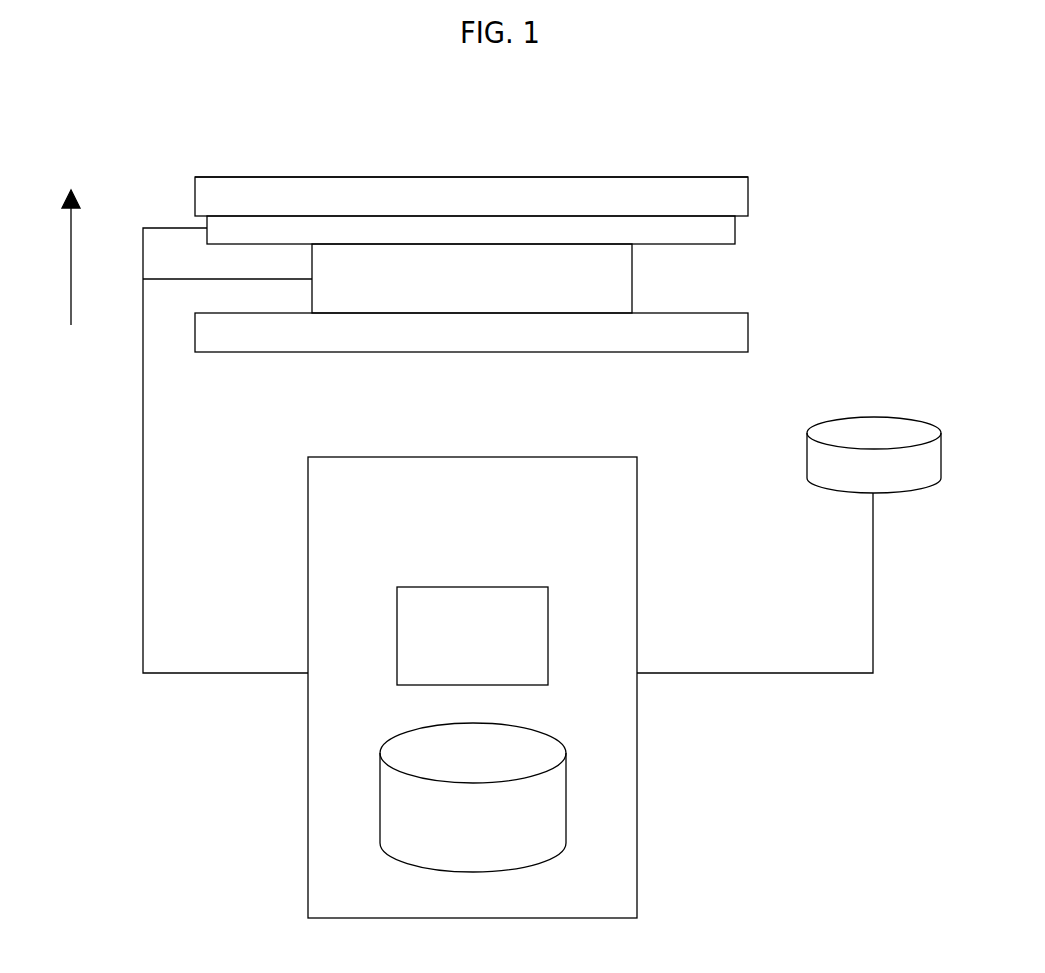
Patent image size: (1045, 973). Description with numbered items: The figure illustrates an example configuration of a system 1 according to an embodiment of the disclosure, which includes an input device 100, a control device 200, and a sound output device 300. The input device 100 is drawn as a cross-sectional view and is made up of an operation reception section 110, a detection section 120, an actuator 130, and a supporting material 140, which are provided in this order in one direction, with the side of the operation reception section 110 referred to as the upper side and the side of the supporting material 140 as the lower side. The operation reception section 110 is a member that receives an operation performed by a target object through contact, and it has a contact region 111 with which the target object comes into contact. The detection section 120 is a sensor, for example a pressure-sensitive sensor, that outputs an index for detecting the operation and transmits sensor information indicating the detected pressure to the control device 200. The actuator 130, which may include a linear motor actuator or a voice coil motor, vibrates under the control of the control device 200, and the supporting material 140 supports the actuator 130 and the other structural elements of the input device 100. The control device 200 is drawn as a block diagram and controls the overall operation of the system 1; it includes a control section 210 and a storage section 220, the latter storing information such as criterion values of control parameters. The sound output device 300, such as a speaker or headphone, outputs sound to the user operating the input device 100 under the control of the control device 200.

The system 1 is at (490, 505).
The input device 100 is at (557, 241).
The operation reception section 110 is at (748, 197).
The contact region 111 is at (672, 177).
The detection section 120 is at (735, 230).
The actuator 130 is at (632, 283).
The supporting material 140 is at (523, 332).
The control device 200 is at (516, 681).
The control section 210 is at (523, 586).
The storage section 220 is at (535, 730).
The sound output device 300 is at (870, 415).